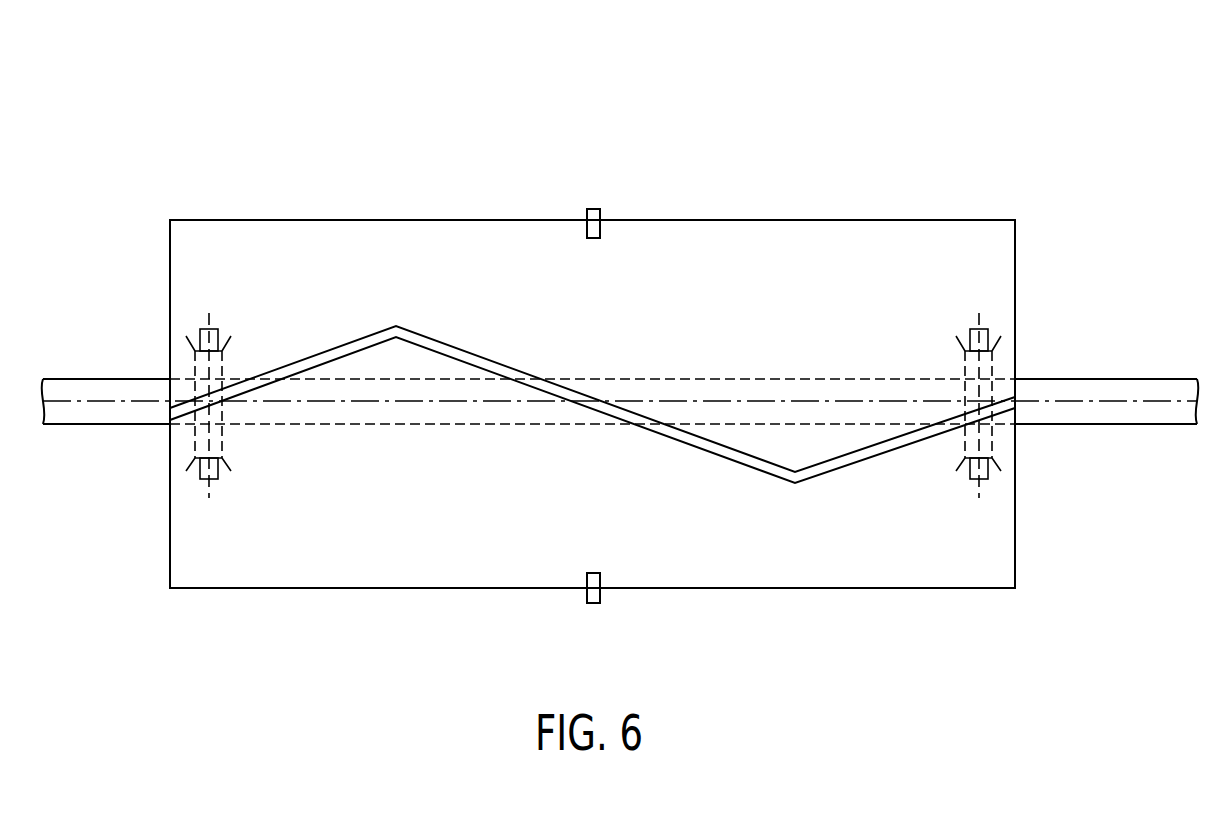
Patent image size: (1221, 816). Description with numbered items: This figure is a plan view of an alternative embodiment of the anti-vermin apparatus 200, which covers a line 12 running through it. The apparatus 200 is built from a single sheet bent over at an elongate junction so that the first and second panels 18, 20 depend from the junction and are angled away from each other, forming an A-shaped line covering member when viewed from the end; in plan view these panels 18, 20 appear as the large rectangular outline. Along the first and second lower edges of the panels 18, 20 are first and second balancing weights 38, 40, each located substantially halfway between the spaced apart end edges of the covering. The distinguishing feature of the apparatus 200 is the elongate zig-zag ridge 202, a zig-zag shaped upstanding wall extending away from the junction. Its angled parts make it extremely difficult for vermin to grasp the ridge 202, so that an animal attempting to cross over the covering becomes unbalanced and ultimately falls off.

The anti-vermin apparatus 200 is at (802, 104).
The pipe 12 is at (92, 379).
The first panel 18 is at (810, 560).
The second panel 20 is at (885, 237).
The first balancing weight 38 is at (595, 208).
The second balancing weight 40 is at (592, 605).
The elongate zig-zag ridge 202 is at (565, 393).